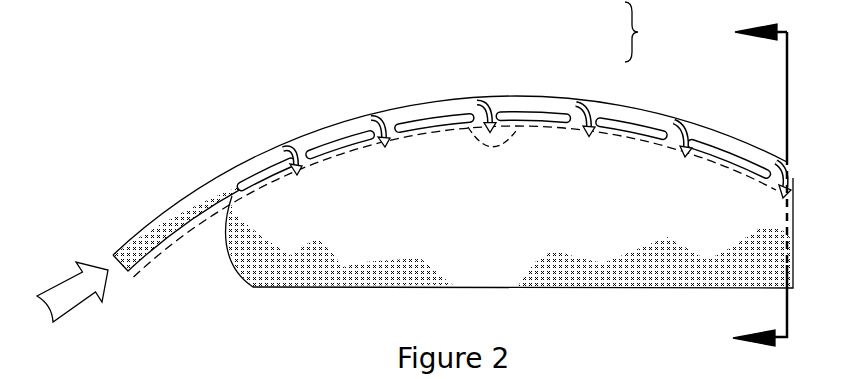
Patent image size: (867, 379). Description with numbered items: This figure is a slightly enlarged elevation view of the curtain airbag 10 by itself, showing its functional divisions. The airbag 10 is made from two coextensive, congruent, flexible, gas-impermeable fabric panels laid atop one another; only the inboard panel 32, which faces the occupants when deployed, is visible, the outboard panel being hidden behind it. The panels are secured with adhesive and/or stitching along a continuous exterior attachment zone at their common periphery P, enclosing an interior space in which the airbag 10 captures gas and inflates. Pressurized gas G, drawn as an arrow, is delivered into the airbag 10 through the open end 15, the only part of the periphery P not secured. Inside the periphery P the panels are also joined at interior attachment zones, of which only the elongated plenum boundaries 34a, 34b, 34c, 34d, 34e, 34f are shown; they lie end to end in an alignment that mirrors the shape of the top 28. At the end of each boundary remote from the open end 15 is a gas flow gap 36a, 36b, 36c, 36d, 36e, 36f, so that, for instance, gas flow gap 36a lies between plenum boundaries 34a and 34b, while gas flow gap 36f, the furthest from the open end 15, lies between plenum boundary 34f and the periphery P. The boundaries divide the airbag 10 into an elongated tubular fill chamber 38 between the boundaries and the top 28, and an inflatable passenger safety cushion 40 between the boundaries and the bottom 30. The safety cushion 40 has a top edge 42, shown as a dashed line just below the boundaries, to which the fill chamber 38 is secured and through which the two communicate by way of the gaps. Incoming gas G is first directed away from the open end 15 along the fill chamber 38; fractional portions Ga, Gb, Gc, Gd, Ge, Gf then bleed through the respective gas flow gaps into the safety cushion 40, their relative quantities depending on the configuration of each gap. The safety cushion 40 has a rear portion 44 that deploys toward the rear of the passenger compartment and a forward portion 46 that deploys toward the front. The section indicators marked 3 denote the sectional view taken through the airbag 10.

The airbag 10 is at (654, 32).
The open end 15 is at (114, 262).
The top 28 is at (372, 287).
The bottom 30 is at (443, 240).
The inboard panel 32 is at (588, 233).
The plenum boundary 34a is at (243, 190).
The plenum boundary 34b is at (287, 150).
The plenum boundary 34c is at (407, 122).
The plenum boundary 34d is at (497, 113).
The plenum boundary 34e is at (628, 126).
The plenum boundary 34f is at (717, 147).
The gas flow gap 36a is at (289, 153).
The gas flow gap 36b is at (383, 122).
The gas flow gap 36c is at (494, 110).
The gas flow gap 36d is at (598, 116).
The gas flow gap 36e is at (688, 132).
The gas flow gap 36f is at (784, 186).
The tubular fill chamber 38 is at (163, 218).
The safety cushion 40 is at (372, 286).
The top edge 42 is at (536, 125).
The rear portion 44 is at (754, 223).
The forward portion 46 is at (303, 203).
The pressurized gas G is at (82, 303).
The portion of pressurized gas Ga is at (287, 160).
The portion of pressurized gas Gb is at (376, 118).
The portion of pressurized gas Gc is at (478, 100).
The portion of pressurized gas Gd is at (574, 108).
The portion of pressurized gas Ge is at (684, 108).
The portion of pressurized gas Gf is at (788, 166).
The common periphery P is at (515, 107).
The section line 3- 3 is at (772, 186).